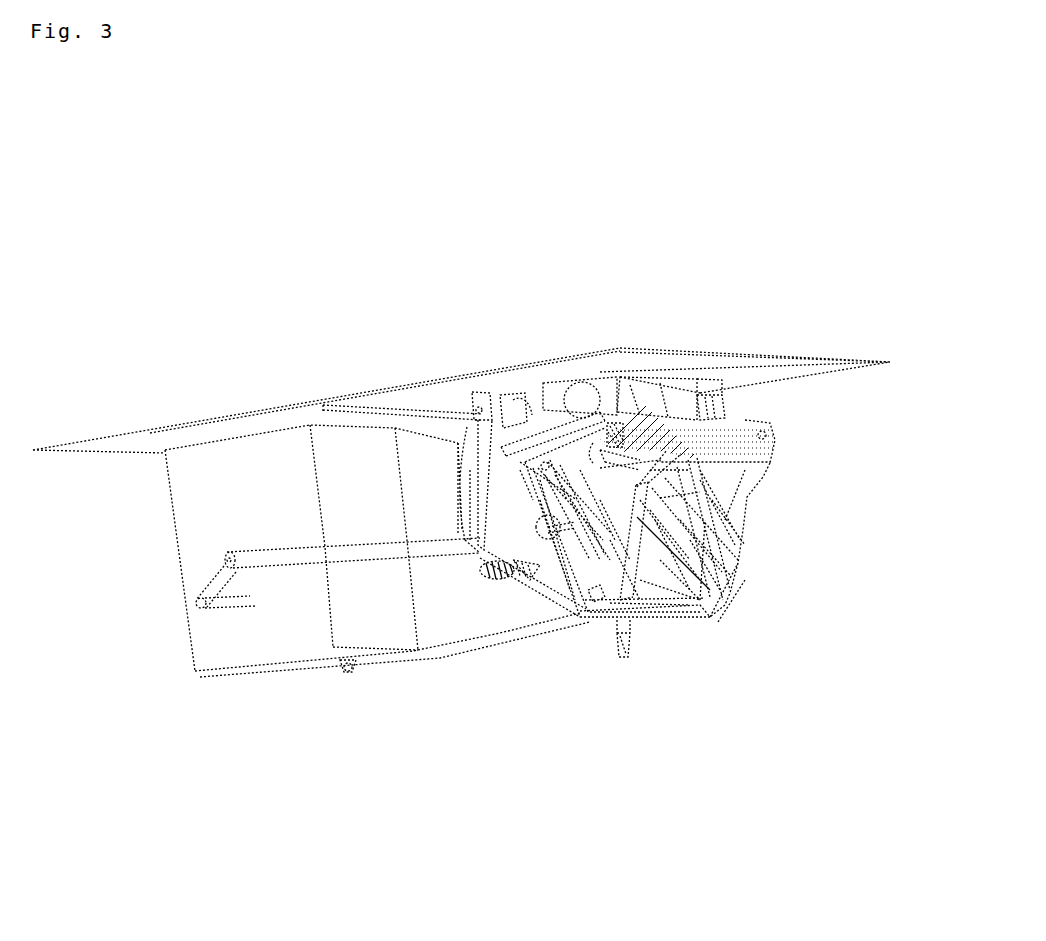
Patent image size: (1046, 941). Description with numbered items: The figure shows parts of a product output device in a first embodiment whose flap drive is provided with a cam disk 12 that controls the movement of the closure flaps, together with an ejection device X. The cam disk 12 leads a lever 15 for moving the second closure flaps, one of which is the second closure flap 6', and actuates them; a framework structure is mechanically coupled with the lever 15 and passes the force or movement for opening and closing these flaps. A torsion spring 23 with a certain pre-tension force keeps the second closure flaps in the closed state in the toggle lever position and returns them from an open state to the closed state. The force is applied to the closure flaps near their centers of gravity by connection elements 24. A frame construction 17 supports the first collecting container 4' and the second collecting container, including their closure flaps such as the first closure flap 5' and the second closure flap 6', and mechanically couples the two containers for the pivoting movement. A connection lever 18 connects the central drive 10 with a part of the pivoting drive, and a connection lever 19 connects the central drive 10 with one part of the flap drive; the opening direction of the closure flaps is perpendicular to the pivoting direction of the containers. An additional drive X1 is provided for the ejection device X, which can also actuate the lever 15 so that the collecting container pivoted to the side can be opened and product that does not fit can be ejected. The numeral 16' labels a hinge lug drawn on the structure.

The central drive 10 is at (280, 667).
The cam disk 12 is at (473, 453).
The lever 15 is at (545, 465).
The first hinge lug 16' is at (486, 726).
The frame construction 17 is at (735, 552).
The connection lever 18 is at (380, 663).
The connection lever 19 is at (297, 560).
The torsion spring 23 is at (622, 430).
The connection element 24 is at (668, 503).
The first collecting container 4' is at (641, 720).
The first closure flap 5' is at (606, 612).
The second closure flap 6' is at (663, 603).
The ejection device X is at (523, 447).
The additional drive X1 is at (583, 390).